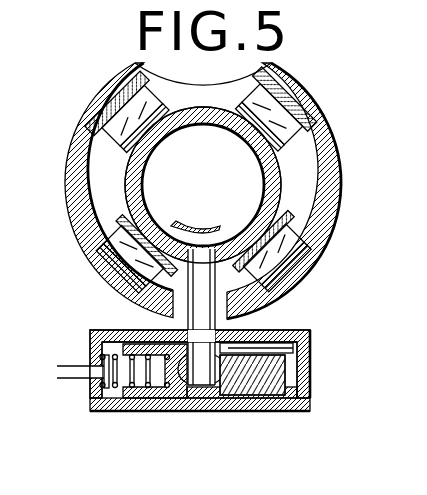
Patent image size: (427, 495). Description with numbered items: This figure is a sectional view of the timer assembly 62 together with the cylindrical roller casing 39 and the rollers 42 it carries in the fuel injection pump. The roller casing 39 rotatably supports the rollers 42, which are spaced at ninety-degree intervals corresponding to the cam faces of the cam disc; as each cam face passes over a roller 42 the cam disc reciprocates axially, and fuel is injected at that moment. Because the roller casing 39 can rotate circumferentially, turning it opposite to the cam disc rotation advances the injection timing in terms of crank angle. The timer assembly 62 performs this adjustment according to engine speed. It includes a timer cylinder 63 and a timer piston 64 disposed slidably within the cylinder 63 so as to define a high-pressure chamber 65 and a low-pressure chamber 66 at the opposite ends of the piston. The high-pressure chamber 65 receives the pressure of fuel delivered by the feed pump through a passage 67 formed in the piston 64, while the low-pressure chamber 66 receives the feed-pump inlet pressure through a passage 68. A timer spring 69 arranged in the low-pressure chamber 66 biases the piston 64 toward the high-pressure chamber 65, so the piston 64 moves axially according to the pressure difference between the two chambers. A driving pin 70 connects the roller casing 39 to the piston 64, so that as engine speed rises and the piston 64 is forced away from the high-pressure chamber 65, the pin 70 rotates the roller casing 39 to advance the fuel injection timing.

The roller casing 39 is at (336, 186).
The rollers 42 is at (117, 113).
The timer assembly 62 is at (312, 352).
The timer cylinder 63 is at (313, 400).
The timer piston 64 is at (230, 392).
The high-pressure chamber 65 is at (300, 377).
The low-pressure chamber 66 is at (115, 375).
The passage 67 is at (268, 357).
The passage 68 is at (72, 370).
The timer spring 69 is at (150, 387).
The driving pin 70 is at (195, 320).